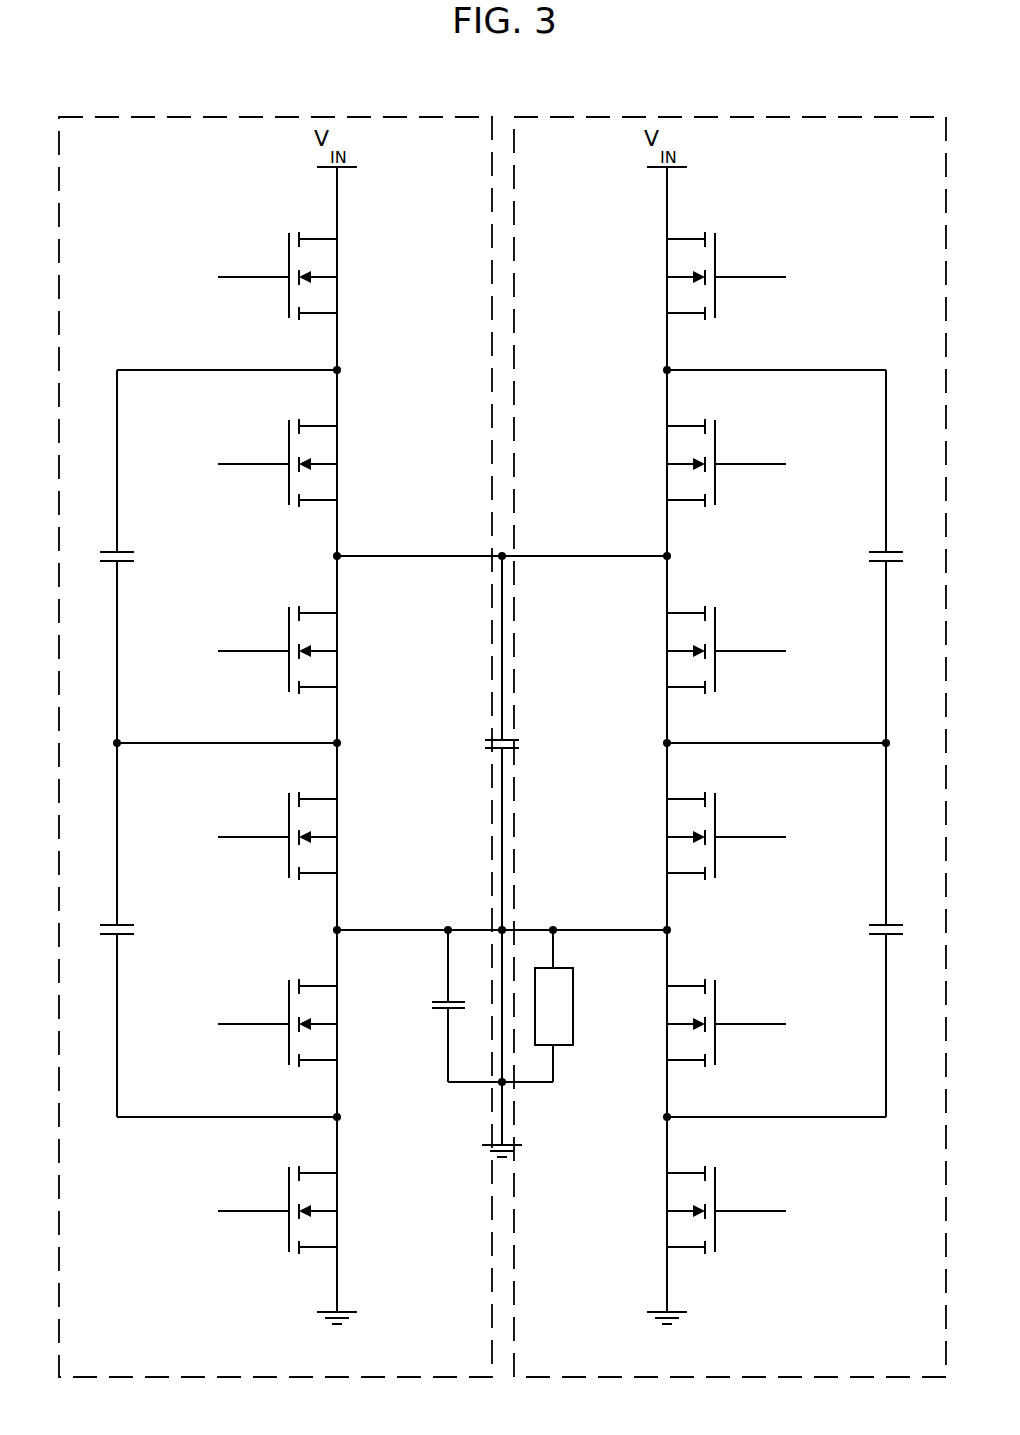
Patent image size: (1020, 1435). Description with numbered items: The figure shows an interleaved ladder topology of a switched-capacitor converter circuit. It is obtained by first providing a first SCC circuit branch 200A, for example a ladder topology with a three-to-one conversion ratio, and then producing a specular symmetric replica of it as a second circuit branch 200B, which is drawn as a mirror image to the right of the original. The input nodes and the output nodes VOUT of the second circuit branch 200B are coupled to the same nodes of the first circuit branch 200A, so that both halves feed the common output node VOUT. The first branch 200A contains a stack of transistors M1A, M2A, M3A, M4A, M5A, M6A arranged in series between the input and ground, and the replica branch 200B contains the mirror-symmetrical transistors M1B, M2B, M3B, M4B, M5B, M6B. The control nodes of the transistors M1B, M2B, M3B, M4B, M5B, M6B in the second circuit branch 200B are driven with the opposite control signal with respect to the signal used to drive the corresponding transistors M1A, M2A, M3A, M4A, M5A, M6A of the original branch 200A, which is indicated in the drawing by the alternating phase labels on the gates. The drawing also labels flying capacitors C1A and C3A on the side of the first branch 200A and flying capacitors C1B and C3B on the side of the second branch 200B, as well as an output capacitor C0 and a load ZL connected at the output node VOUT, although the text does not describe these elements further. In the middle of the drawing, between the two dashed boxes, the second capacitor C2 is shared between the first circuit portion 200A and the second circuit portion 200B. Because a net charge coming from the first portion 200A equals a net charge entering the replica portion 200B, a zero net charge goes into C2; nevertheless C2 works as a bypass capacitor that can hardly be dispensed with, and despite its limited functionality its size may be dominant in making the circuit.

The first SCC circuit branch 200A is at (143, 138).
The second circuit branch 200B is at (820, 145).
The transistor M1A is at (324, 257).
The transistor M2A is at (324, 444).
The transistor M3A is at (324, 631).
The transistor M4A is at (324, 817).
The transistor M5A is at (324, 1004).
The transistor M6A is at (324, 1191).
The transistor M1B is at (686, 257).
The transistor M2B is at (686, 444).
The transistor M3B is at (686, 631).
The transistor M4B is at (686, 817).
The transistor M5B is at (686, 1004).
The transistor M6B is at (686, 1191).
The capacitor C1A is at (128, 562).
The capacitor C3A is at (126, 934).
The capacitor C1B is at (872, 562).
The capacitor C3B is at (872, 934).
The second capacitor C2 is at (517, 745).
The output capacitor C0 is at (438, 1010).
The load impedance ZL is at (563, 1022).
The output node VOUT is at (557, 928).